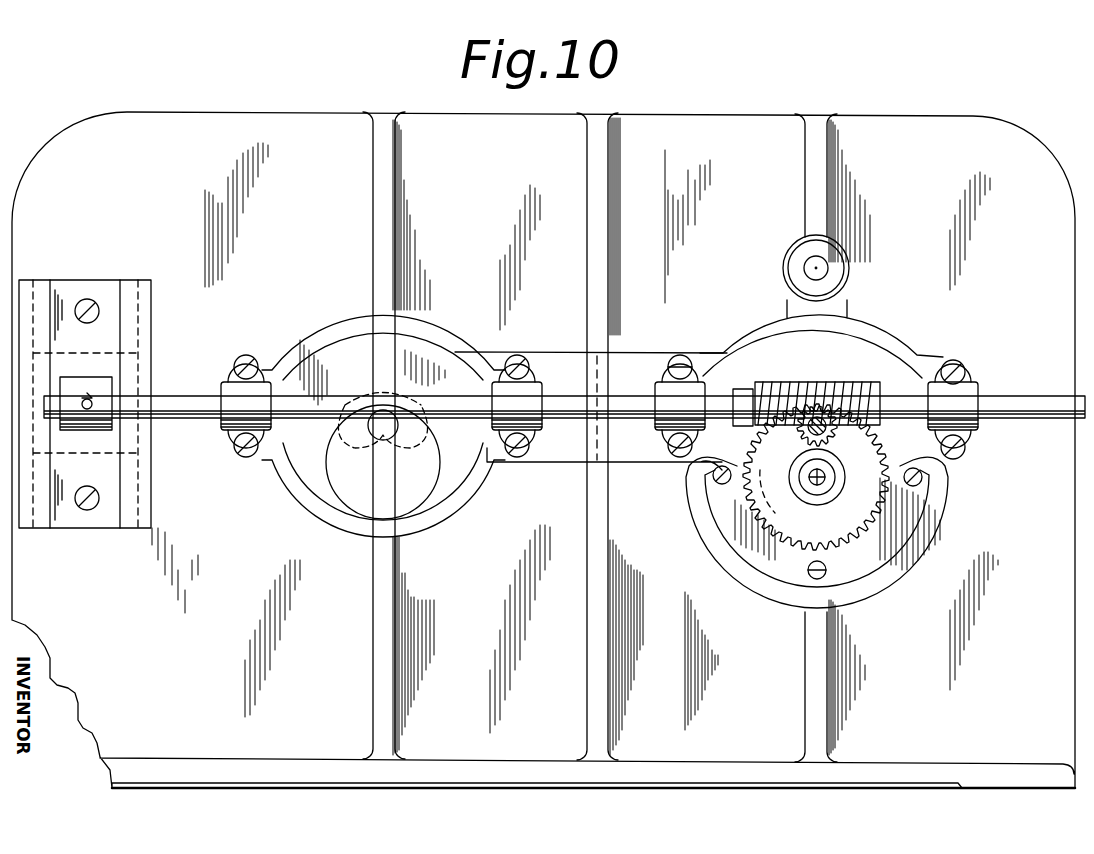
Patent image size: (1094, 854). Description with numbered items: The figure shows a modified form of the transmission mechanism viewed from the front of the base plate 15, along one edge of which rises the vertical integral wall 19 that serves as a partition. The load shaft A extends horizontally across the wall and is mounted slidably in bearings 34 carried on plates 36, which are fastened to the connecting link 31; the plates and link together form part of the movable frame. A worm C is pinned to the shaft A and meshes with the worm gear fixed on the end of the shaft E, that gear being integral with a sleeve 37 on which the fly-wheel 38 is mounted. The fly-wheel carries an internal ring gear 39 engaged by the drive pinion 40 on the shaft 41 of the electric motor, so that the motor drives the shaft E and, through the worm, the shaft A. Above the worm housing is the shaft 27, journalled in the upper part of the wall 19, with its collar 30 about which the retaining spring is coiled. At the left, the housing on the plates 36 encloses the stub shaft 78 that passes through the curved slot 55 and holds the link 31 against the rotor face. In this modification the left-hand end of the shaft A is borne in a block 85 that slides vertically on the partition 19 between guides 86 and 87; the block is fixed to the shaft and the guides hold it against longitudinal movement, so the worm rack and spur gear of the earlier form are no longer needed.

The base plate 15 is at (541, 762).
The vertical integral wall 19 is at (575, 437).
The shaft 27 is at (820, 274).
The collar 30 is at (797, 268).
The connecting link 31 is at (558, 450).
The bearings 34 is at (220, 387).
The plates 36 is at (450, 508).
The sleeve 37 is at (838, 492).
The fly-wheel 38 is at (787, 593).
The internal ring gear 39 is at (773, 540).
The drive pinion 40 is at (836, 430).
The motor shaft 41 is at (805, 436).
The curved slot 55 is at (432, 427).
The stub shaft 78 is at (382, 440).
The block 85 is at (78, 380).
The guide 86 is at (40, 290).
The guide 87 is at (133, 286).
The load shaft A is at (193, 408).
The worm C is at (793, 382).
The shaft E is at (827, 477).